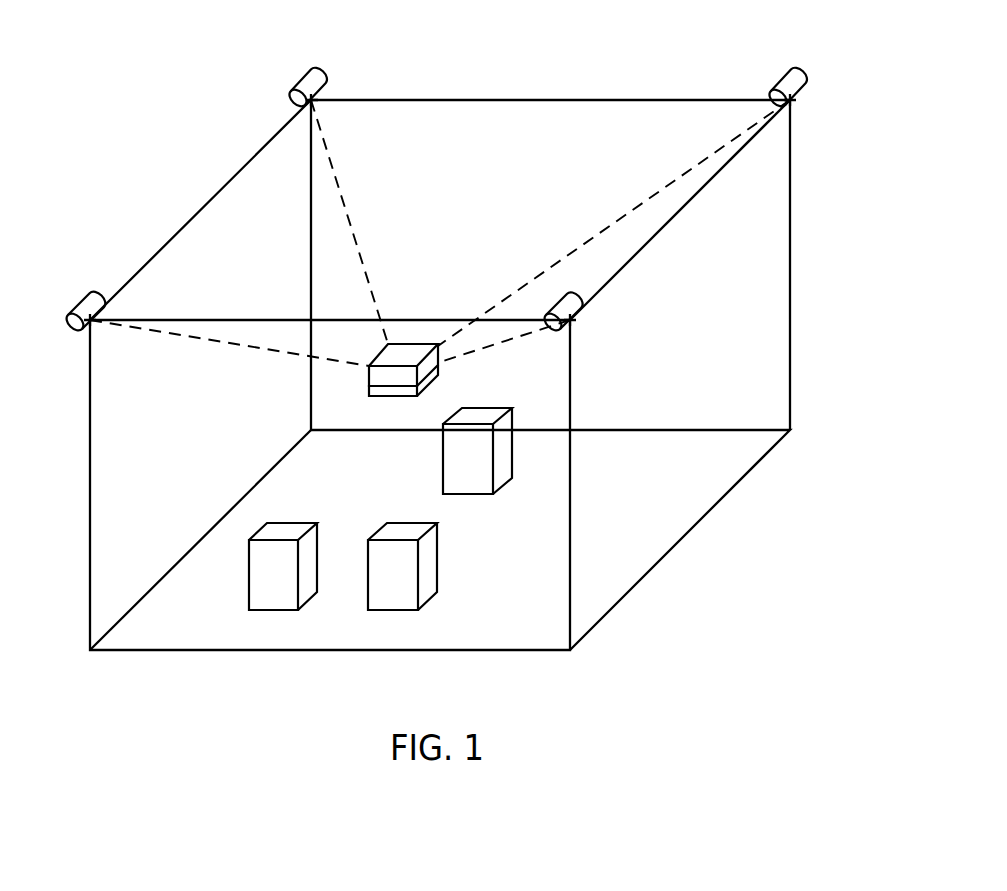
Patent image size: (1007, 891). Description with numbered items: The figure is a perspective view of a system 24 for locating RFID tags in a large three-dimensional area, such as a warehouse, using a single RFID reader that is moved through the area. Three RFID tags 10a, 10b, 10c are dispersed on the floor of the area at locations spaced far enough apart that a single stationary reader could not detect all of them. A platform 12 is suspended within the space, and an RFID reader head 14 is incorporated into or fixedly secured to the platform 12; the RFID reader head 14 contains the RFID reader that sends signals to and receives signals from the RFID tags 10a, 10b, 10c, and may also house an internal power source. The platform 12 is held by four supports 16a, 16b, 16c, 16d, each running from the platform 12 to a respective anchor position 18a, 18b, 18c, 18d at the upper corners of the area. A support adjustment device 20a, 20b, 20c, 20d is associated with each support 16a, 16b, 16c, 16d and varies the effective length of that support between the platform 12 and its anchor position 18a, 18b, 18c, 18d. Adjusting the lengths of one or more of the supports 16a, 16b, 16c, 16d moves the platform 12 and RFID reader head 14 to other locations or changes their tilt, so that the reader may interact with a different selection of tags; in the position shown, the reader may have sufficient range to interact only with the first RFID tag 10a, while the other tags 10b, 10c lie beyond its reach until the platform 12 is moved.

The RFID tag 10a is at (473, 495).
The RFID tag 10b is at (437, 572).
The RFID tag 10c is at (273, 611).
The platform 12 is at (400, 344).
The RFID reader head 14 is at (390, 397).
The support 16a is at (632, 212).
The support 16b is at (510, 339).
The support 16c is at (213, 343).
The support 16d is at (347, 206).
The anchor position 18a is at (792, 102).
The anchor position 18b is at (573, 320).
The anchor position 18c is at (93, 318).
The anchor position 18d is at (313, 99).
The support adjustment device 20a is at (800, 70).
The support adjustment device 20b is at (581, 301).
The support adjustment device 20c is at (78, 302).
The support adjustment device 20d is at (308, 76).
The system 24 is at (150, 161).